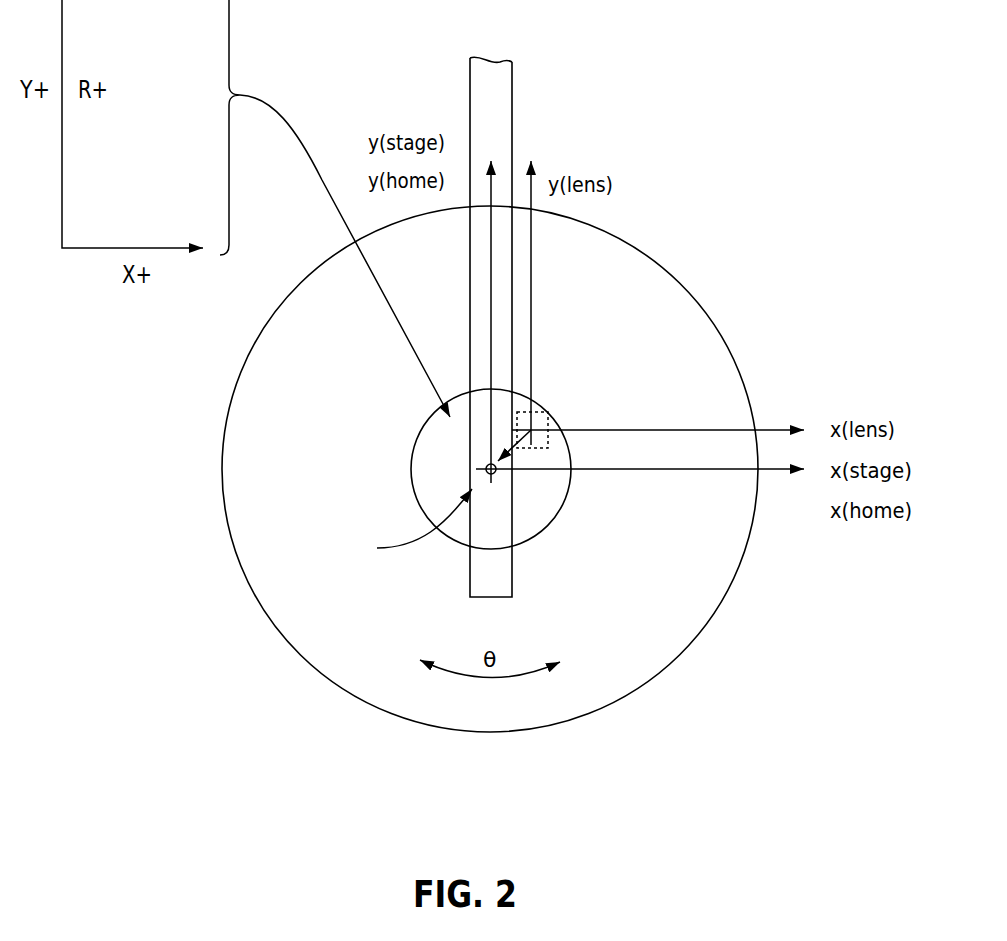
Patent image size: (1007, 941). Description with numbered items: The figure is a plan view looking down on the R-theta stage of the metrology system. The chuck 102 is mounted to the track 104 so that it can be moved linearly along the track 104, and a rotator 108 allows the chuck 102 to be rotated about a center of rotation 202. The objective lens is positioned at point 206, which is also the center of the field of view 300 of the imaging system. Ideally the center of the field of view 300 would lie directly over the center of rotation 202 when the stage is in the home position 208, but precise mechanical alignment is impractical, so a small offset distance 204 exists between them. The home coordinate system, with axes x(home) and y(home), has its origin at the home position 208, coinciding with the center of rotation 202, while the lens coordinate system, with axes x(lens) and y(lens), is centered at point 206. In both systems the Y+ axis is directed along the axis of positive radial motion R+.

The chuck 102 is at (724, 290).
The track 104 is at (514, 101).
The rotator 108 is at (542, 532).
The center of rotation 202 is at (486, 465).
The offset distance 204 is at (508, 452).
The point 206 is at (548, 413).
The home position 208 is at (401, 523).
The field of view 300 is at (548, 448).